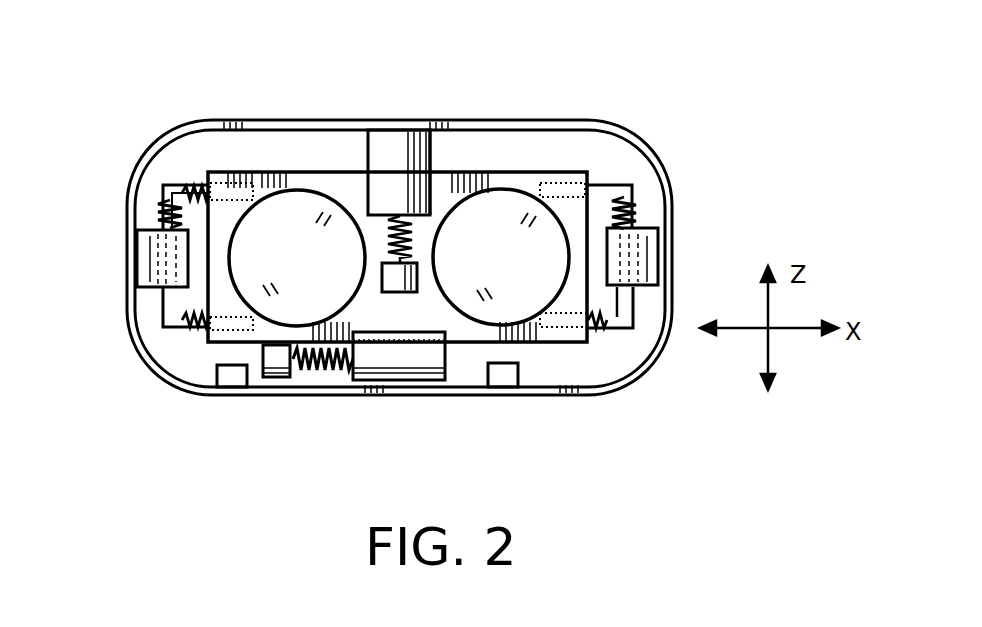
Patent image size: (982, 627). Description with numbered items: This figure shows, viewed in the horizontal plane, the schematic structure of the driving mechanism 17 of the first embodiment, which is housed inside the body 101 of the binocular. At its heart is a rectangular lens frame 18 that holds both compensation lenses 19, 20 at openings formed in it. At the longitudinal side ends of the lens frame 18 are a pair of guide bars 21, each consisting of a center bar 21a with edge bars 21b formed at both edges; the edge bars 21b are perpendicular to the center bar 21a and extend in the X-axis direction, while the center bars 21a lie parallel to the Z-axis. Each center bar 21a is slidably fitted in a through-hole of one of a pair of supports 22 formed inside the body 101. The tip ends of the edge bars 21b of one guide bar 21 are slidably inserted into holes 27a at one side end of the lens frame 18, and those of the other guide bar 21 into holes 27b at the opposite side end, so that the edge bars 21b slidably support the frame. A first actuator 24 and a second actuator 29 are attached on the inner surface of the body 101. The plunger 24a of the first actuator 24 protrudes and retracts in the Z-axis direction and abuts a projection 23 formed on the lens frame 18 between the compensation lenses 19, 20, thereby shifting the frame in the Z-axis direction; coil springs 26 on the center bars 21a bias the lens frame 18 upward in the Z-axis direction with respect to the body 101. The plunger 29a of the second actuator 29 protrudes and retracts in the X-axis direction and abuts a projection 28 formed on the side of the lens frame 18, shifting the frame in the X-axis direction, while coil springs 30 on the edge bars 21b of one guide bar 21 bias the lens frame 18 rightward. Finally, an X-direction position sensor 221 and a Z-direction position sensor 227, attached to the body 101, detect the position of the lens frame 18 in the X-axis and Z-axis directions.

The driving mechanism 17 is at (430, 60).
The rectangular lens frame 18 is at (337, 180).
The compensation lens 19 is at (287, 220).
The compensation lens 20 is at (480, 223).
The guide bar 21 is at (195, 428).
The center bar 21a is at (170, 327).
The edge bar 21b is at (220, 325).
The support 22 is at (143, 263).
The projection 23 is at (396, 287).
The first actuator 24 is at (397, 137).
The plunger 24a is at (442, 140).
The coil spring 26 is at (157, 220).
The hole 27a is at (222, 183).
The hole 27b is at (570, 183).
The projection 28 is at (280, 377).
The second actuator 29 is at (400, 365).
The plunger 29a is at (333, 370).
The coil spring 30 is at (193, 182).
The body 101 is at (638, 153).
The X-direction position sensor 221 is at (232, 380).
The Z-direction position sensor 227 is at (500, 380).